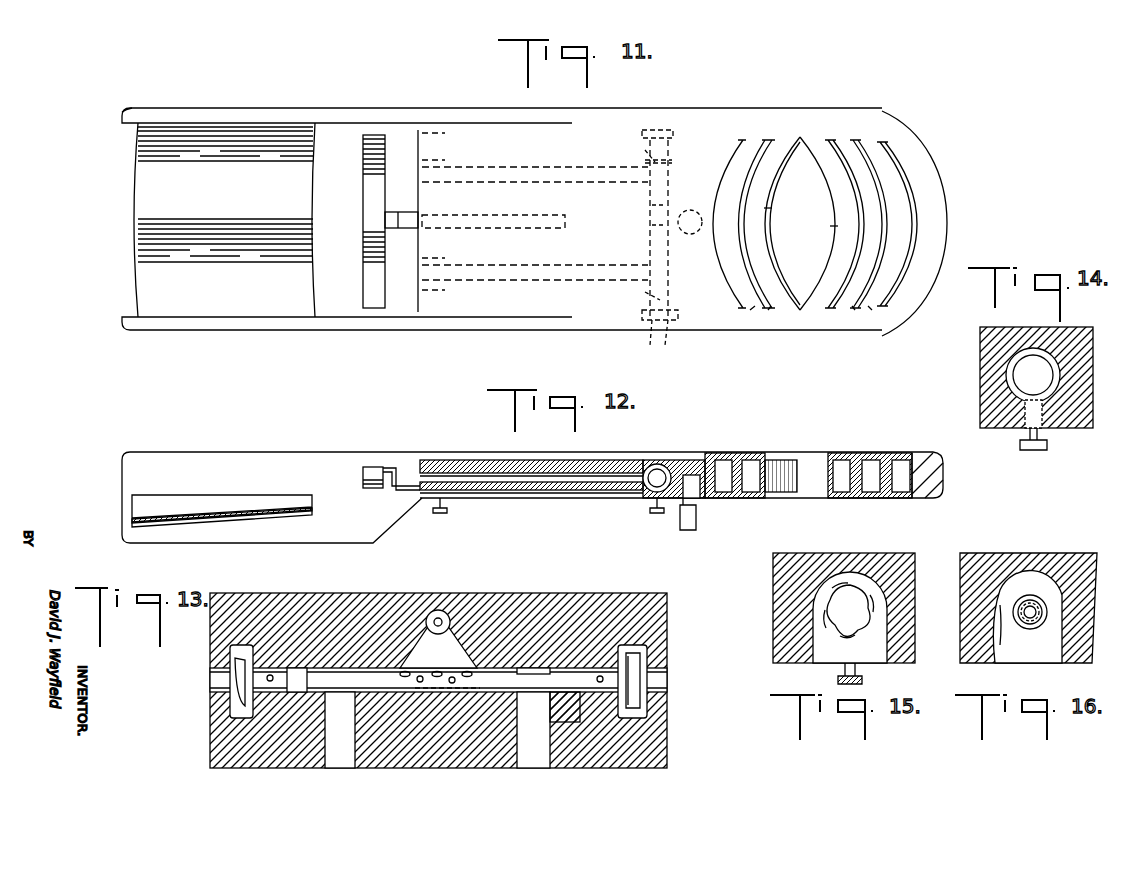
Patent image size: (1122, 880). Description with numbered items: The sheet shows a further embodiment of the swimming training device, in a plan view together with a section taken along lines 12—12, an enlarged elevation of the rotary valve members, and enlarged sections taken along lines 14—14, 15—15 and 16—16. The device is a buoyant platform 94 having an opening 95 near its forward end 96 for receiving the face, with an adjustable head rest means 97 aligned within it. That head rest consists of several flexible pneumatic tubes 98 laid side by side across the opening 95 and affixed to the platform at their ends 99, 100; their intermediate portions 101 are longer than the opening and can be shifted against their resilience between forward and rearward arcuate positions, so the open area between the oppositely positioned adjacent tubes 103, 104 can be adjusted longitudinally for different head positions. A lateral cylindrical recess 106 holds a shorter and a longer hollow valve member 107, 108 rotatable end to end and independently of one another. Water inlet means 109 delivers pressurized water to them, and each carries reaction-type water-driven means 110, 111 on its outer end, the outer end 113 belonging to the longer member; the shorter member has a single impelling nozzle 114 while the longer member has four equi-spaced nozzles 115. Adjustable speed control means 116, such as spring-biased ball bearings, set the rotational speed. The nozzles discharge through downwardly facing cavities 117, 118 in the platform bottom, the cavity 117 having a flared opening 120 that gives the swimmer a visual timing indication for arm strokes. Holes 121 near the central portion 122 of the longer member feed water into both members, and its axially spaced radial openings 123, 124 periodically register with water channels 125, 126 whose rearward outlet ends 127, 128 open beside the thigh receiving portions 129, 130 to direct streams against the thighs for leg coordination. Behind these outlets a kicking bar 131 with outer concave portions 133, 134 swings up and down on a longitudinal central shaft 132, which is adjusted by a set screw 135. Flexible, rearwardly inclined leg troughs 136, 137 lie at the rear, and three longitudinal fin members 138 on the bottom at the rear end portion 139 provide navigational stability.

In FIG. 11, the section lines 12— 12 is at (108, 224).
In FIG. 11, the section lines 14— 14 is at (696, 256).
In FIG. 11, the section lines 15— 15 is at (697, 322).
In FIG. 11, the section lines 16— 16 is at (704, 142).
In FIG. 11, the buoyant platform 94 is at (452, 130).
In FIG. 12, the buoyant platform 94 is at (393, 462).
In FIG. 11, the opening 95 is at (805, 150).
In FIG. 11, the forward end 96 is at (928, 176).
In FIG. 12, the forward end 96 is at (943, 485).
In FIG. 11, the adjustable head rest means 97 is at (892, 262).
In FIG. 11, the pneumatic tubes 98 is at (770, 312).
In FIG. 12, the pneumatic tubes 98 is at (750, 495).
In FIG. 11, the tube end 99 is at (785, 146).
In FIG. 11, the tube end 100 is at (817, 310).
In FIG. 11, the intermediate portions 101 is at (912, 198).
In FIG. 11, the adjacent tube 103 is at (830, 226).
In FIG. 11, the adjacent tube 104 is at (772, 208).
In FIG. 11, the cylindrical recess 106 is at (650, 228).
In FIG. 12, the cylindrical recess 106 is at (655, 495).
In FIG. 13, the cylindrical recess 106 is at (568, 708).
In FIG. 14, the cylindrical recess 106 is at (1018, 372).
In FIG. 11, the shorter hollow cylindrical valve member 107 is at (668, 150).
In FIG. 13, the shorter hollow cylindrical valve member 107 is at (290, 660).
In FIG. 11, the longer hollow cylindrical valve member 108 is at (668, 193).
In FIG. 13, the longer hollow cylindrical valve member 108 is at (500, 664).
In FIG. 11, the water inlet means 109 is at (680, 230).
In FIG. 12, the water inlet means 109 is at (688, 490).
In FIG. 13, the water inlet means 109 is at (448, 610).
In FIG. 16, the water-driven means 110 is at (1036, 598).
In FIG. 11, the water-driven means 111 is at (656, 334).
In FIG. 15, the water-driven means 111 is at (856, 588).
In FIG. 11, the outer end 113 is at (665, 340).
In FIG. 16, the impelling nozzle 114 is at (1000, 655).
In FIG. 15, the impelling nozzles 115 is at (845, 636).
In FIG. 11, the adjustable speed control means 116 is at (648, 160).
In FIG. 14, the adjustable speed control means 116 is at (1018, 430).
In FIG. 16, the downwardly facing cavity 117 is at (1043, 650).
In FIG. 15, the downwardly facing cavity 118 is at (870, 660).
In FIG. 16, the flared opening 120 is at (982, 655).
In FIG. 13, the holes 121 is at (423, 676).
In FIG. 13, the central portion 122 is at (452, 692).
In FIG. 13, the radially oriented opening 123 is at (315, 695).
In FIG. 13, the radially oriented opening 124 is at (540, 662).
In FIG. 11, the water channel 125 is at (505, 168).
In FIG. 13, the water channel 125 is at (330, 731).
In FIG. 11, the water channel 126 is at (512, 276).
In FIG. 13, the water channel 126 is at (525, 741).
In FIG. 11, the outlet end 127 is at (428, 169).
In FIG. 11, the outlet end 128 is at (428, 272).
In FIG. 11, the thigh receiving portion 129 is at (432, 143).
In FIG. 11, the thigh receiving portion 130 is at (438, 252).
In FIG. 11, the kicking bar 131 is at (372, 218).
In FIG. 12, the kicking bar 131 is at (372, 467).
In FIG. 11, the central shaft 132 is at (410, 228).
In FIG. 11, the outer concave portion 133 is at (372, 183).
In FIG. 11, the outer concave portion 134 is at (372, 282).
In FIG. 12, the set screw 135 is at (447, 512).
In FIG. 11, the leg trough 136 is at (255, 128).
In FIG. 11, the leg trough 137 is at (243, 300).
In FIG. 11, the fin members 138 is at (122, 113).
In FIG. 12, the fin members 138 is at (277, 530).
In FIG. 11, the rear end portion 139 is at (120, 284).
In FIG. 12, the rear end portion 139 is at (120, 547).